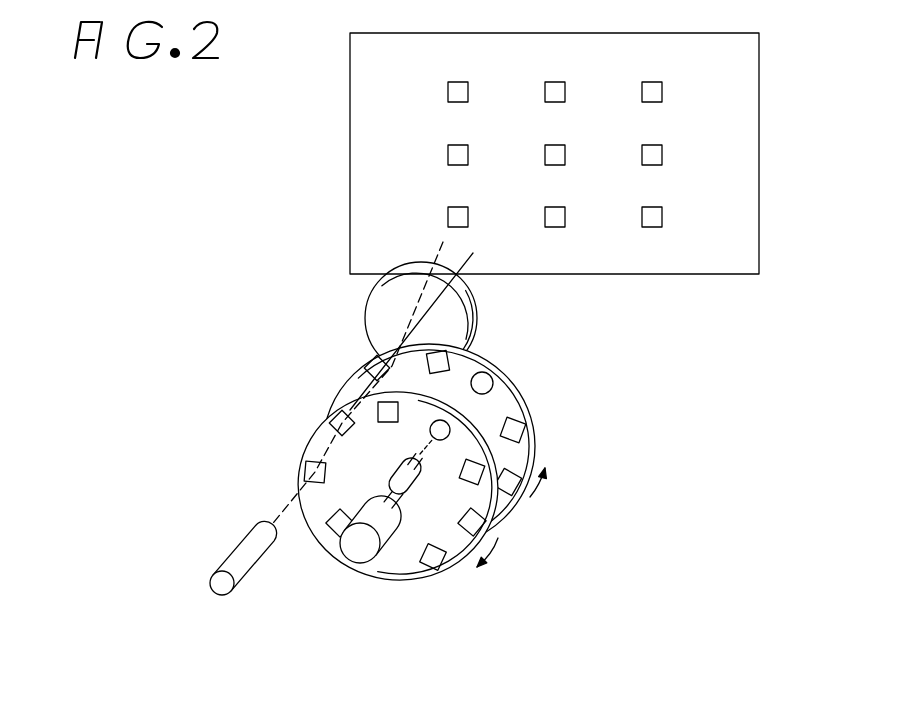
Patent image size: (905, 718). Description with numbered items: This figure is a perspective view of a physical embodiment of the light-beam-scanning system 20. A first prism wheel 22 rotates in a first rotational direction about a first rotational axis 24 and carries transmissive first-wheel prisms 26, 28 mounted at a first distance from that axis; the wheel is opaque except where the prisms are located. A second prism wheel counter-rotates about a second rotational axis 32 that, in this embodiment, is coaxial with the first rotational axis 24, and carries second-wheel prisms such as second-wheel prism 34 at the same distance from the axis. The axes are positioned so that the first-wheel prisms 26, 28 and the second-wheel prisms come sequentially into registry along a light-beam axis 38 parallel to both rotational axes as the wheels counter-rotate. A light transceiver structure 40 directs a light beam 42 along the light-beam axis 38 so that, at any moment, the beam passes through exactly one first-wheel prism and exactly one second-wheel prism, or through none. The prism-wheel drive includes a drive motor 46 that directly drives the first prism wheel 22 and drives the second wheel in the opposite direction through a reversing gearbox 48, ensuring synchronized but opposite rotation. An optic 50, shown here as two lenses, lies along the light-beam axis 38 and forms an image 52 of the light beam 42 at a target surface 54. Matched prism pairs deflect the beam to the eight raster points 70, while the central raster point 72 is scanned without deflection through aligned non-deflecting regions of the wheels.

The light-beam-scanning system 20 is at (227, 148).
The first prism wheel 22 is at (428, 579).
The first rotational axis 24 is at (400, 499).
The first-wheel prism 26 is at (331, 421).
The first-wheel prism 28 is at (305, 463).
The second rotational axis 32 is at (426, 452).
The second-wheel prism 34 is at (373, 358).
The light-beam axis 38 is at (469, 258).
The light transceiver structure 40 is at (247, 567).
The light beam 42 is at (445, 246).
The drive motor 46 is at (347, 565).
The reversing gearbox 48 is at (416, 480).
The optic 50 is at (370, 322).
The image 52 is at (556, 82).
The target surface 54 is at (759, 52).
The raster points 70 is at (664, 93).
The central raster point 72 is at (557, 145).